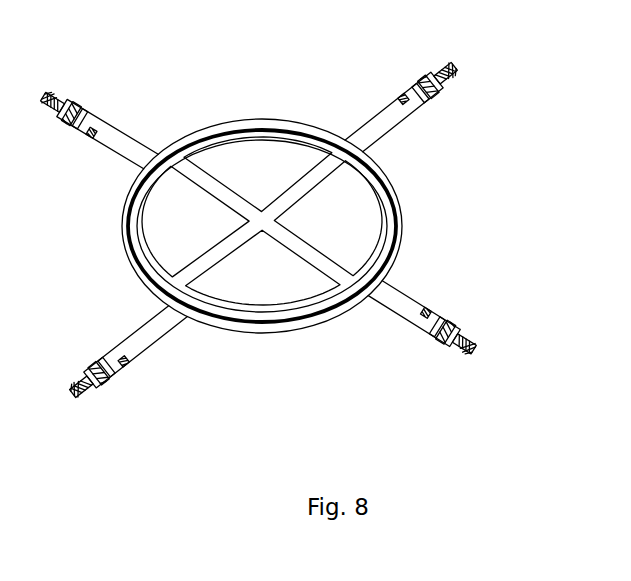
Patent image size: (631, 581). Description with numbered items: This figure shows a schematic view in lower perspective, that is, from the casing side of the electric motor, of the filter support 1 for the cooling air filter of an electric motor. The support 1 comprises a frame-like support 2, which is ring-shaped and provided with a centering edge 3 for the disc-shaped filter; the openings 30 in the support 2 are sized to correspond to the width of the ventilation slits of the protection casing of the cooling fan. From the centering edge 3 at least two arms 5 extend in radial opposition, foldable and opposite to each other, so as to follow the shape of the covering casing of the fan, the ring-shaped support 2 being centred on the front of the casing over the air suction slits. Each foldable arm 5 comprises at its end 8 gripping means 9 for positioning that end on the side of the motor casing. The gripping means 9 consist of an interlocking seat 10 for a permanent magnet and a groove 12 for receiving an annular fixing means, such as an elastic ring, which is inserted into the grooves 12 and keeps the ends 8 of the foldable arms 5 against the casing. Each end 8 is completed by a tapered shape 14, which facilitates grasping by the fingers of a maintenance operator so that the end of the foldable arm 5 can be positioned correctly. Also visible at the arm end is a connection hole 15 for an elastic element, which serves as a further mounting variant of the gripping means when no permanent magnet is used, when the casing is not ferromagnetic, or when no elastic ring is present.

The support 1 is at (300, 332).
The frame-like support 2 is at (376, 222).
The centering edge 3 is at (404, 222).
The arms 5 is at (128, 170).
The end 8 is at (108, 108).
The gripping means 9 is at (96, 102).
The interlocking seat 10 is at (94, 130).
The groove 12 is at (86, 100).
The tapered shape 14 is at (58, 100).
The connection hole 15 is at (72, 118).
The openings 30 is at (258, 152).